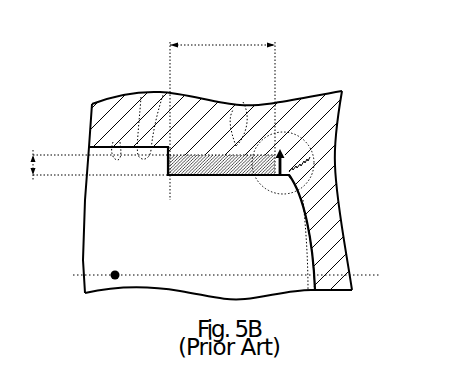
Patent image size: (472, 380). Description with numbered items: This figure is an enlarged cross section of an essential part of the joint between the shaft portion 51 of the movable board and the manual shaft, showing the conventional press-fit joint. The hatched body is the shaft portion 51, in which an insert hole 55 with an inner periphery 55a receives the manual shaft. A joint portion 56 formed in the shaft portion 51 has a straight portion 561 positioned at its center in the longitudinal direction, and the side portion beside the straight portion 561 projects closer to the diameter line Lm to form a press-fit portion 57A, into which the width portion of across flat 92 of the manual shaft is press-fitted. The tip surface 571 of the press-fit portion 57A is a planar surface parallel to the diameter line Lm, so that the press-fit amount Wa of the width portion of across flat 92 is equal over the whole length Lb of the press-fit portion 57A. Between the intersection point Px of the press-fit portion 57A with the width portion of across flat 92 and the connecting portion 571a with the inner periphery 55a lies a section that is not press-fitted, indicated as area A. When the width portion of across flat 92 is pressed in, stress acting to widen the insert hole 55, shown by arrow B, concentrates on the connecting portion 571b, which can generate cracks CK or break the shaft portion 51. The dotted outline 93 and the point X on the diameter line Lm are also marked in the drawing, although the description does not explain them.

The joint portion 56 is at (110, 116).
The straight portion 561 is at (143, 95).
The tip surface 571 is at (210, 100).
The connecting portion 571a is at (168, 178).
The connecting portion 571b is at (280, 178).
The press-fit portion 57A is at (243, 102).
The hidden recess 93 is at (116, 160).
The insert hole 55 is at (228, 263).
The inner periphery 55a is at (305, 215).
The shaft portion 51 is at (343, 186).
The width portion of across flat 92 is at (308, 252).
The intersection point Px is at (262, 176).
The arrow B is at (285, 145).
The area A is at (292, 174).
The crack CK is at (314, 160).
The point X is at (113, 271).
The diameter line Lm is at (204, 290).
The length of the conventional press-fit portion Lb is at (222, 109).
The press-fit amount Wa is at (142, 164).